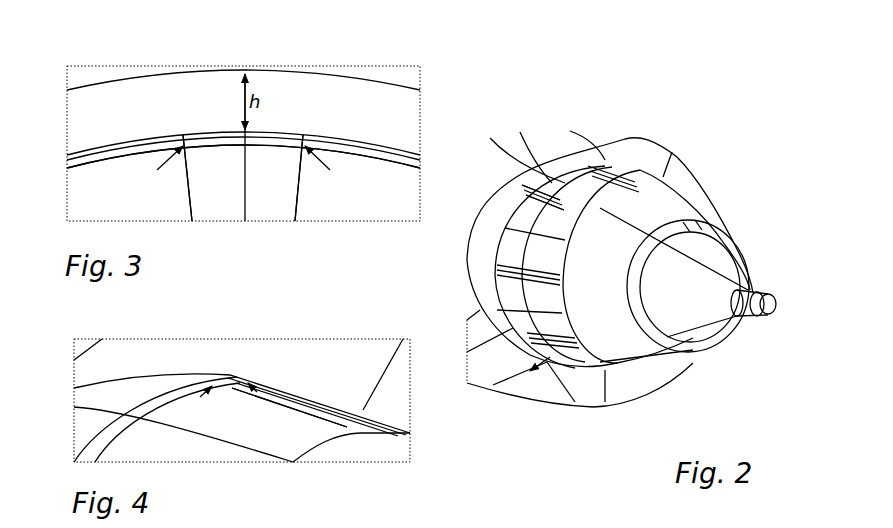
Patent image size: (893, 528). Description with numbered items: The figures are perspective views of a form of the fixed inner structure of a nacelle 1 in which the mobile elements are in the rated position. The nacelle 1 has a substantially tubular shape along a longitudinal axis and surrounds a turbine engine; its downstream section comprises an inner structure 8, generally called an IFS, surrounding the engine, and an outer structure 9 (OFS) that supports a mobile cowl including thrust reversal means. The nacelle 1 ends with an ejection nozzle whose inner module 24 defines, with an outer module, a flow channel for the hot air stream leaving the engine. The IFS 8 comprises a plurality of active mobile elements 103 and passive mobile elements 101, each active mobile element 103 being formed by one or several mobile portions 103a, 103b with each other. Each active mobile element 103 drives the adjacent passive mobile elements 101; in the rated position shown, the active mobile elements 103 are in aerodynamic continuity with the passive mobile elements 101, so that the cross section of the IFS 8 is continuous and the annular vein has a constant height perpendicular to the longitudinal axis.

In FIG. 2, the nacelle 1 is at (742, 147).
In FIG. 3, the inner structure (IFS) 8 is at (89, 186).
In FIG. 4, the inner structure (IFS) 8 is at (384, 447).
In FIG. 2, the inner structure (IFS) 8 is at (632, 349).
In FIG. 3, the outer structure (OFS) 9 is at (85, 77).
In FIG. 4, the outer structure (OFS) 9 is at (390, 390).
In FIG. 2, the outer structure (OFS) 9 is at (490, 131).
In FIG. 2, the inner module 24 is at (710, 317).
In FIG. 3, the passive mobile element 101 is at (376, 191).
In FIG. 4, the passive mobile element 101 is at (387, 418).
In FIG. 2, the passive mobile element 101 is at (616, 207).
In FIG. 3, the active mobile element 103 is at (302, 189).
In FIG. 4, the active mobile element 103 is at (292, 420).
In FIG. 2, the active mobile element 103 is at (561, 190).
In FIG. 3, the mobile portion 103a is at (267, 160).
In FIG. 4, the mobile portion 103a is at (349, 428).
In FIG. 2, the mobile portion 103a is at (519, 186).
In FIG. 3, the mobile portion 103b is at (222, 160).
In FIG. 2, the mobile portion 103b is at (518, 187).